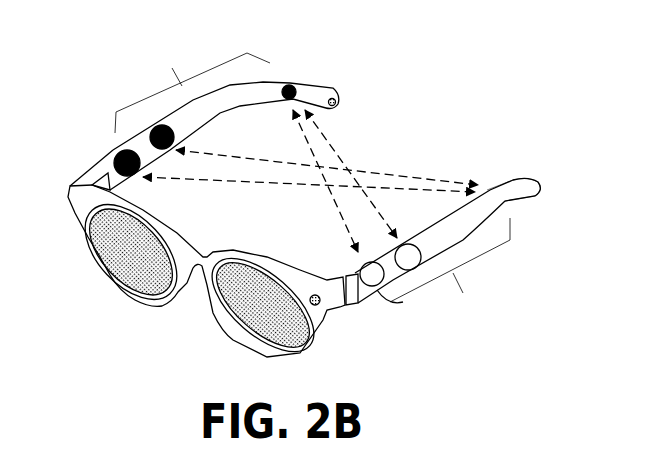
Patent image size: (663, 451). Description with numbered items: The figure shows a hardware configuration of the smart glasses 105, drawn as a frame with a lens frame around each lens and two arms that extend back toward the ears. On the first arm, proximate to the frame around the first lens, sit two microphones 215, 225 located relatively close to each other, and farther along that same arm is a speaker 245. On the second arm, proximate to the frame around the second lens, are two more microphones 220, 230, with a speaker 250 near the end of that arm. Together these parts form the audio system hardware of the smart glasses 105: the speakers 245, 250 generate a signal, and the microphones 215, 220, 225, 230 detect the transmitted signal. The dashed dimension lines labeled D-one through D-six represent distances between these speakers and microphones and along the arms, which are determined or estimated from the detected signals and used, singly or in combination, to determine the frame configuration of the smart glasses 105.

The smart glasses 105 is at (130, 50).
The microphone 215 is at (108, 148).
The microphone 225 is at (148, 121).
The speaker 245 is at (290, 77).
The speaker 250 is at (492, 186).
The microphone 220 is at (372, 300).
The microphone 230 is at (420, 283).